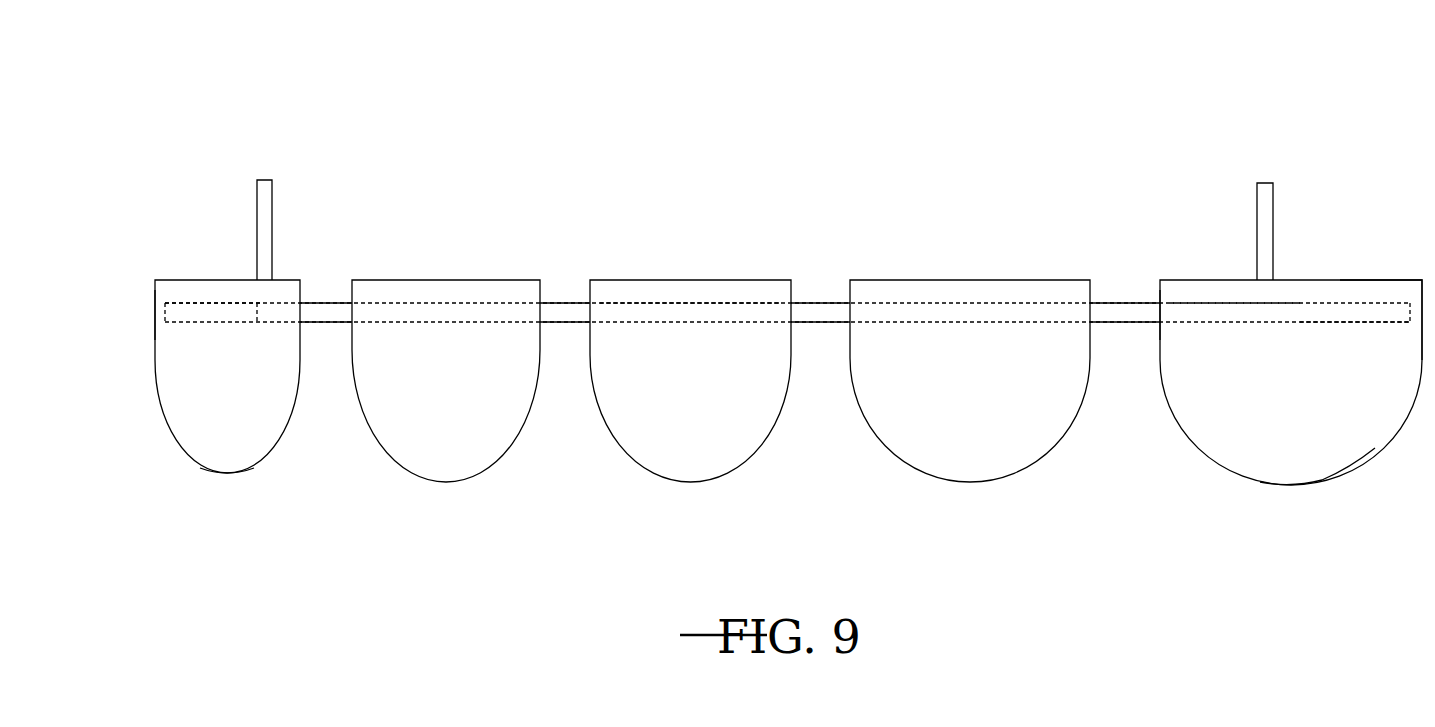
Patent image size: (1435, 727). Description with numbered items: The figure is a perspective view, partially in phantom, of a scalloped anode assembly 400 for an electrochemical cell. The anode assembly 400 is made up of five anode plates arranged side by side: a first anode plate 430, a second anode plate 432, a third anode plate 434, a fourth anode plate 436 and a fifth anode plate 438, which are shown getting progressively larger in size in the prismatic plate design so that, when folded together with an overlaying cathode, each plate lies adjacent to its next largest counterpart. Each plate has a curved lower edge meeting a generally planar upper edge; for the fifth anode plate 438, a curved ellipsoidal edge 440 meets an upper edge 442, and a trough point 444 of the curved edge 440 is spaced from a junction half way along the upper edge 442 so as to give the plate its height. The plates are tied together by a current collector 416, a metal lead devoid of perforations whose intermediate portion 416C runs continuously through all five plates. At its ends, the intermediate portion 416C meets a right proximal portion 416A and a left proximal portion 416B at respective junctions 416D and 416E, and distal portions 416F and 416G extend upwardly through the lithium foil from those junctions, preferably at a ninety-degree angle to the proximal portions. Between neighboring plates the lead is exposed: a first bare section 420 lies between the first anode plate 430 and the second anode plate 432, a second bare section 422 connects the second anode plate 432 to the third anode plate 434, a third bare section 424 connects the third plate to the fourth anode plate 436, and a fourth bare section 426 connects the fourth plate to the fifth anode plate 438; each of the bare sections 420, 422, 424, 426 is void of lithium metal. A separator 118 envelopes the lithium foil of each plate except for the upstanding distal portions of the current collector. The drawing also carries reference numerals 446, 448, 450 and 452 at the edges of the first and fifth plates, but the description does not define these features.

The anode assembly 400 is at (1150, 112).
The separator 118 is at (197, 447).
The current collector 416 is at (277, 227).
The right proximal portion 416A is at (1398, 305).
The left proximal portion 416B is at (203, 312).
The intermediate portion 416C is at (687, 303).
The junction 416D is at (1265, 310).
The junction 416E is at (262, 285).
The distal portion 416F is at (1267, 220).
The distal portion 416G is at (267, 193).
The first bare section 420 is at (323, 300).
The second bare section 422 is at (557, 300).
The third bare section 424 is at (820, 303).
The fourth bare section 426 is at (1128, 303).
The first anode plate 430 is at (163, 430).
The second anode plate 432 is at (440, 488).
The third anode plate 434 is at (695, 488).
The fourth anode plate 436 is at (971, 488).
The fifth anode plate 438 is at (1411, 404).
The curved ellipsoidal edge 440 is at (1353, 468).
The upper edge 442 is at (1368, 278).
The trough point 444 is at (1298, 490).
The pod left side 446 is at (153, 323).
The pod right side 448 is at (1418, 345).
The pod inner side 450 is at (1157, 312).
The pod bottom tip 452 is at (224, 480).